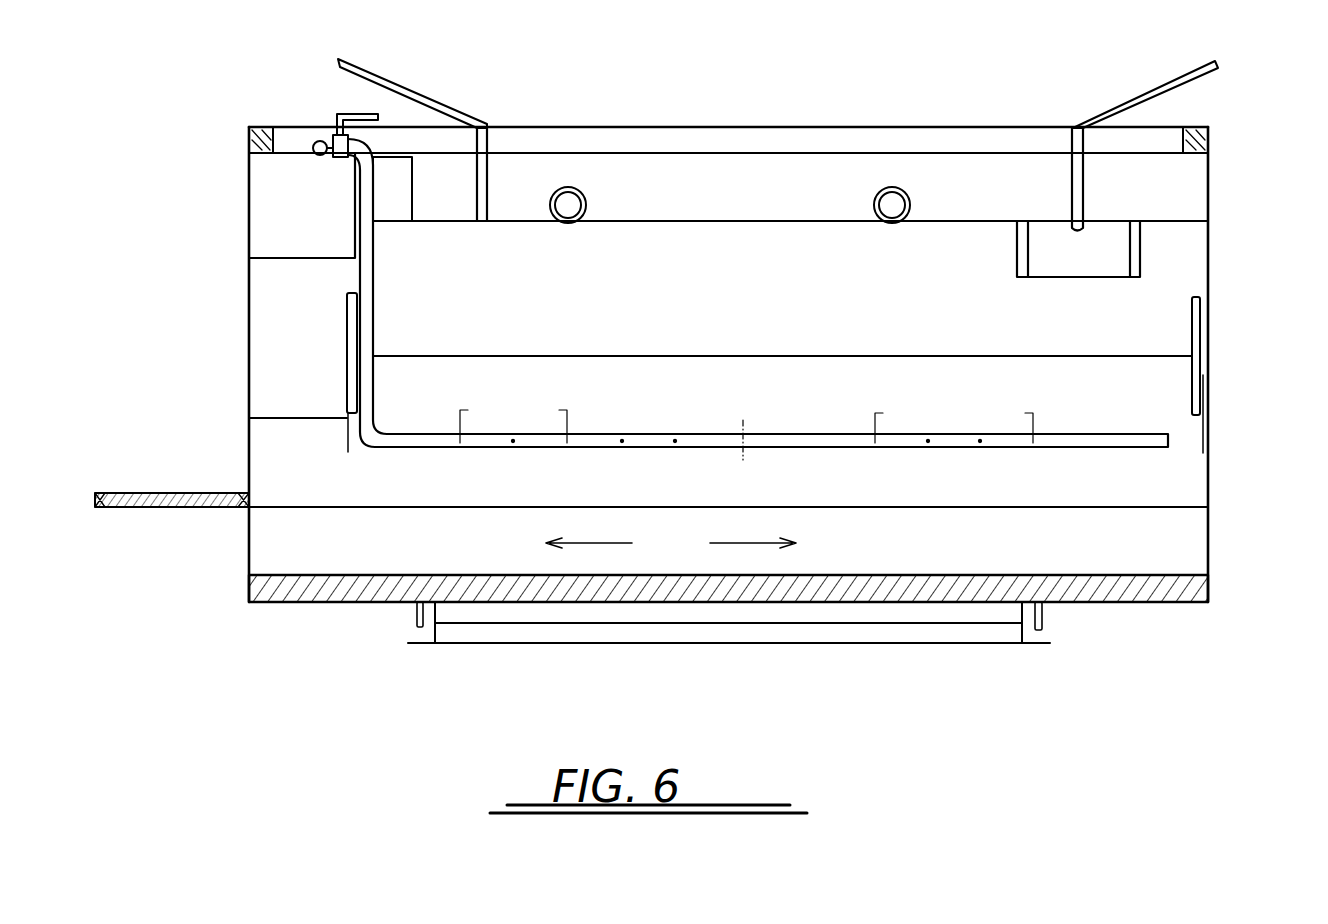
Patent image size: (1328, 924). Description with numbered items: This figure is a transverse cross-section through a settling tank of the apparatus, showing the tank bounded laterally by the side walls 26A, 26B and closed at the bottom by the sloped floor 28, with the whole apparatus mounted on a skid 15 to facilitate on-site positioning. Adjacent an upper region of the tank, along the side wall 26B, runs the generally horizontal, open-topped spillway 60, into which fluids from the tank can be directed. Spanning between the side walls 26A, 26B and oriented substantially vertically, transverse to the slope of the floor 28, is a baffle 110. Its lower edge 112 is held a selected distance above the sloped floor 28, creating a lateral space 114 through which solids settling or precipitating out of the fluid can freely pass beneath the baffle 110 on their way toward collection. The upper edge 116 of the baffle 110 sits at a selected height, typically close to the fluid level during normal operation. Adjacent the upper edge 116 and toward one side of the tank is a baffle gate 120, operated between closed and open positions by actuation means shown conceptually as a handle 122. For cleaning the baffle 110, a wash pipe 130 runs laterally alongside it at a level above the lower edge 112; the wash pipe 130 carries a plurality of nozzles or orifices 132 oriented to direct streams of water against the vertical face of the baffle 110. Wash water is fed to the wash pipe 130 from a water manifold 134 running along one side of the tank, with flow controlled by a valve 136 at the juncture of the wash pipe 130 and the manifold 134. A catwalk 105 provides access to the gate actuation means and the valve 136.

The skid 15 is at (410, 617).
The side wall 26A is at (1208, 286).
The side wall 26B is at (249, 362).
The sloped floor 28 is at (300, 574).
The spillway 60 is at (273, 213).
The catwalk 105 is at (150, 492).
The baffle 110 is at (730, 308).
The lower edge 112 is at (523, 507).
The lateral space 114 is at (671, 546).
The upper edge 116 is at (723, 222).
The baffle gate 120 is at (1068, 250).
The handle 122 is at (1140, 97).
The wash pipe 130 is at (825, 448).
The nozzles or orifices 132 is at (645, 385).
The water manifold 134 is at (312, 147).
The valve 136 is at (340, 158).